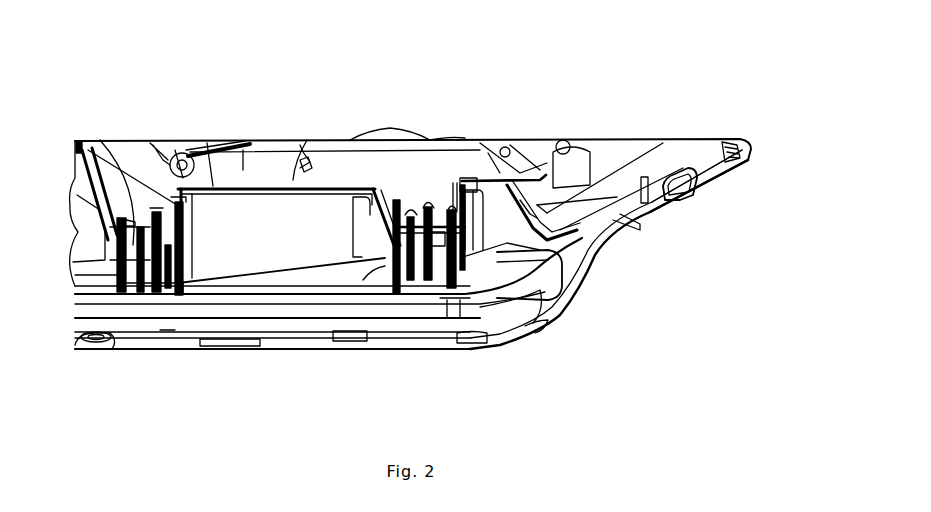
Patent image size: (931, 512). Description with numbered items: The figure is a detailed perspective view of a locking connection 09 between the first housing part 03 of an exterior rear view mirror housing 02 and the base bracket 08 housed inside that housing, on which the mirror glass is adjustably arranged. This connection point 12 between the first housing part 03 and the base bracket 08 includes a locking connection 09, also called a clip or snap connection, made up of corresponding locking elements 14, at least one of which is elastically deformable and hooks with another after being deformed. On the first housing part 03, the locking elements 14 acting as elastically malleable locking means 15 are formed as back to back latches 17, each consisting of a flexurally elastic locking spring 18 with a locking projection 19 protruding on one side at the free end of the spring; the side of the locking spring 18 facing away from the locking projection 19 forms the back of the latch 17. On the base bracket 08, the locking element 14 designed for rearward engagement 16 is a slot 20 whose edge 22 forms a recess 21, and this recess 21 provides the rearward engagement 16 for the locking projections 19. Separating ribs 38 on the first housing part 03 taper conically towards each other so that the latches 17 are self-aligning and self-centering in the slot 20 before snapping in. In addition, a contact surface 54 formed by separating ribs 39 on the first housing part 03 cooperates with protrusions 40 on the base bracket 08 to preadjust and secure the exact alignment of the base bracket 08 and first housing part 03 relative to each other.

The exterior rear view mirror housing 02 is at (100, 352).
The first housing part 03 is at (237, 340).
The base bracket 08 is at (243, 170).
The locking connection 09 is at (418, 185).
The connection point 12 is at (141, 182).
The locking element 14 is at (108, 175).
The locking means 15 is at (157, 162).
The rearward engagement 16 is at (173, 295).
The latch 17 is at (323, 205).
The locking spring 18 is at (443, 300).
The locking projection 19 is at (446, 213).
The slot 20 is at (403, 215).
The recess 21 is at (537, 327).
The edge 22 is at (411, 217).
The separating rib 38 is at (353, 227).
The separating rib 39 is at (665, 192).
The protrusion 40 is at (708, 195).
The contact surface 54 is at (689, 170).